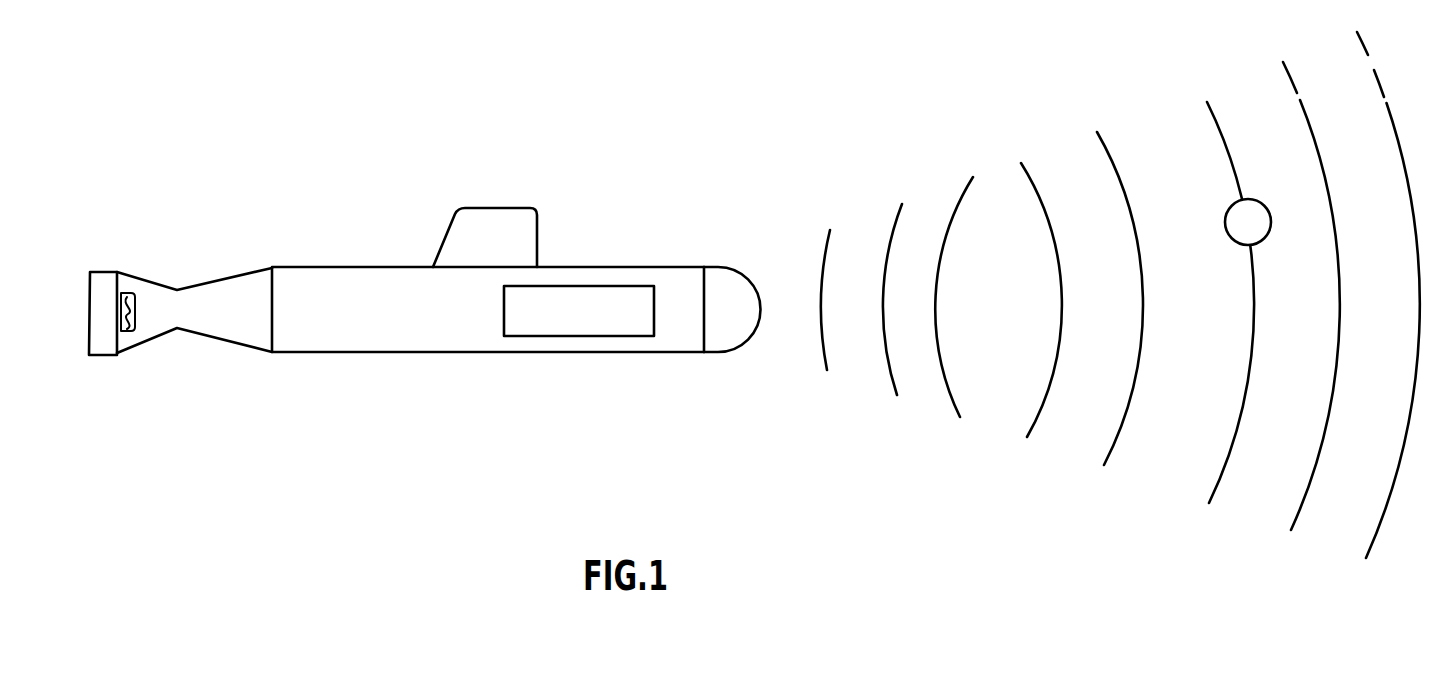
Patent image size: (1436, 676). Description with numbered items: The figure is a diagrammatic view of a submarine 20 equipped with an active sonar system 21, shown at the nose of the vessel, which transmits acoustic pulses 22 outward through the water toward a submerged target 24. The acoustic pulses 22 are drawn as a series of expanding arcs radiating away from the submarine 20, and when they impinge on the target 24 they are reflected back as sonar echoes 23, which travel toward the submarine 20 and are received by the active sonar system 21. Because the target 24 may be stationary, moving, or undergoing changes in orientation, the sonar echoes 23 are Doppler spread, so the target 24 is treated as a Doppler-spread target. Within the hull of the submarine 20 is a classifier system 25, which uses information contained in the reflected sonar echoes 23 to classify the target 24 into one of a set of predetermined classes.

The submarine 20 is at (333, 267).
The active sonar system 21 is at (726, 281).
The acoustic pulses 22 is at (1357, 43).
The sonar echoes 23 is at (962, 195).
The submerged target 24 is at (1232, 239).
The classifier system 25 is at (621, 338).